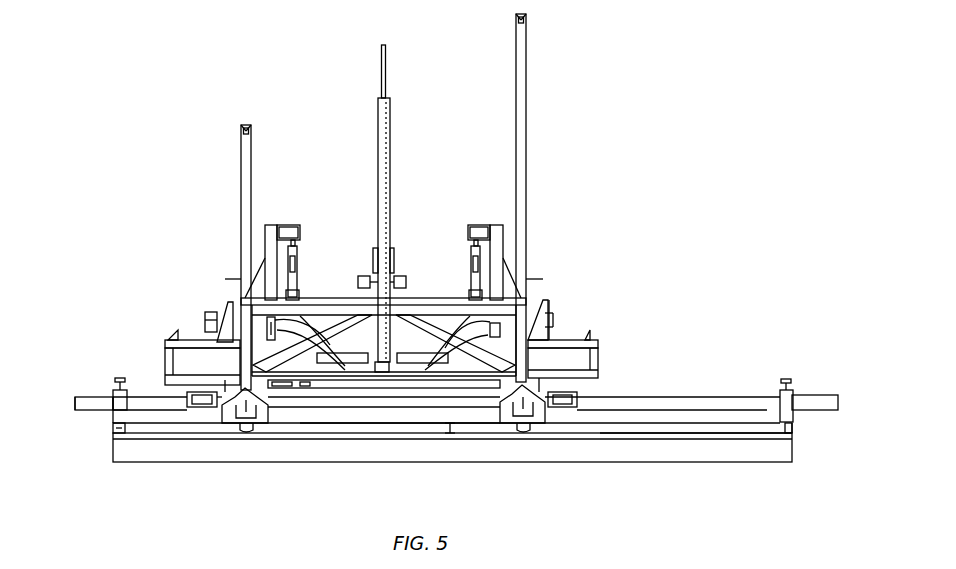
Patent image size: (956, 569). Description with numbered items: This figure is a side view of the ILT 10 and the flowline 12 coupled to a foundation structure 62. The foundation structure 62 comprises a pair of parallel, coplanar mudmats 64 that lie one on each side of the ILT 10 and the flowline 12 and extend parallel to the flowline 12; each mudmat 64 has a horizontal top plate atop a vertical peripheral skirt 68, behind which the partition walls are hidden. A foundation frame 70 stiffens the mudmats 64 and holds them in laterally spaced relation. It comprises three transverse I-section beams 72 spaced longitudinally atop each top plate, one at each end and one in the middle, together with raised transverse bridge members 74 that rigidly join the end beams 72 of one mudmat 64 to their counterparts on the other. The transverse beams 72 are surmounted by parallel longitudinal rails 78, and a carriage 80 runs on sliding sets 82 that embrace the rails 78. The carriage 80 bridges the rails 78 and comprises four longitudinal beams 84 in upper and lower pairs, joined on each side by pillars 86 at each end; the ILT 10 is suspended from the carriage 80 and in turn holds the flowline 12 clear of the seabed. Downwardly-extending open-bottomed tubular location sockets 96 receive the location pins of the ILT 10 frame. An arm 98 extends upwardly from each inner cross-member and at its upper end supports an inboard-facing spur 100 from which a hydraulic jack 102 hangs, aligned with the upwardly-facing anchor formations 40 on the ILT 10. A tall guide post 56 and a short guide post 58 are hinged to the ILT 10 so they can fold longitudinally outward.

The ILT 10 is at (576, 252).
The flowline 12 is at (82, 412).
The anchor formation 40 is at (300, 293).
The tall guide post 56 is at (527, 60).
The short guide post 58 is at (241, 148).
The foundation structure 62 is at (89, 472).
The mudmat 64 is at (736, 468).
The skirt 68 is at (310, 462).
The foundation frame 70 is at (806, 431).
The transverse beam 72 is at (116, 434).
The bridge member 74 is at (118, 395).
The longitudinal rail 78 is at (409, 415).
The carriage 80 is at (537, 297).
The sliding set 82 is at (254, 430).
The longitudinal beam 84 is at (413, 297).
The pillar 86 is at (240, 303).
The location socket 96 is at (472, 309).
The arm 98 is at (265, 244).
The spur 100 is at (288, 223).
The hydraulic jack 102 is at (300, 252).